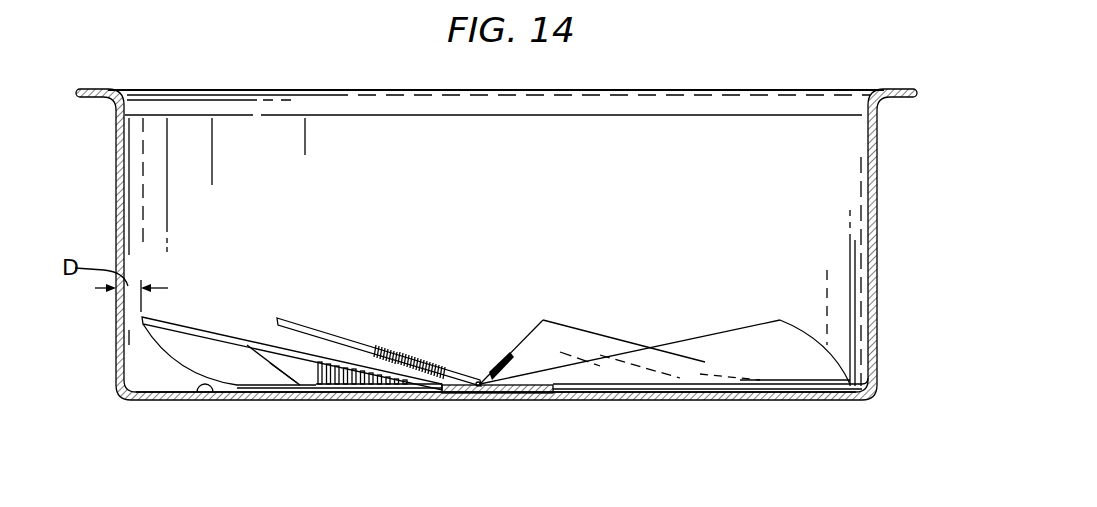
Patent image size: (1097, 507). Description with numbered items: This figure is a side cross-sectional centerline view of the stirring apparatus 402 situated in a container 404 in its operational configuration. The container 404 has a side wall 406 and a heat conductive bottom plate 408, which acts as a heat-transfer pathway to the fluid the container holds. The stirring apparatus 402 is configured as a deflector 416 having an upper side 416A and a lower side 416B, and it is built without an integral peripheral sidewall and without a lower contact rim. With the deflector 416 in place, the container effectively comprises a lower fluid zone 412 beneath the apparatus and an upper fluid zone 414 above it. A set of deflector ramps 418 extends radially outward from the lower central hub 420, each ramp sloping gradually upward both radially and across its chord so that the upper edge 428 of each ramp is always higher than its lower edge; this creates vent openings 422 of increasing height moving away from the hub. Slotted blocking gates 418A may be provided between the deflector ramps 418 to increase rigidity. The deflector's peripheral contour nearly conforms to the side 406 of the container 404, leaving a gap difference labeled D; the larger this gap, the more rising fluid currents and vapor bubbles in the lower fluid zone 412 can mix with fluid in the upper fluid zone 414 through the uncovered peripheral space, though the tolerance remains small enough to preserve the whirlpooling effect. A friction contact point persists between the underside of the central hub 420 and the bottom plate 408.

The stirring apparatus 402 is at (753, 390).
The container 404 is at (852, 106).
The side wall of the container 406 is at (117, 214).
The heat conductive bottom plate 408 is at (213, 394).
The lower fluid zone 412 is at (166, 396).
The upper fluid zone 414 is at (178, 161).
The deflector 416 is at (869, 377).
The upper side of the deflector 416A is at (546, 318).
The lower side of the deflector 416B is at (583, 393).
The deflector ramps 418 is at (283, 368).
The slotted blocking gates 418A is at (405, 358).
The central hub 420 is at (477, 383).
The vent openings 422 is at (222, 347).
The upper edge of the deflector ramp 428 is at (503, 355).